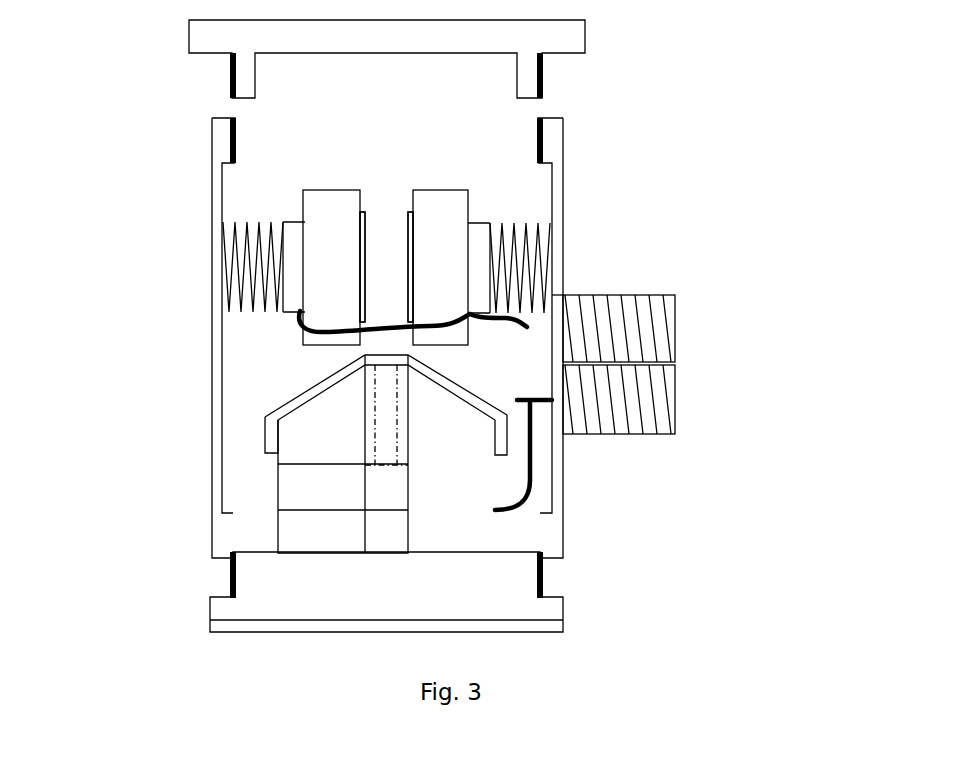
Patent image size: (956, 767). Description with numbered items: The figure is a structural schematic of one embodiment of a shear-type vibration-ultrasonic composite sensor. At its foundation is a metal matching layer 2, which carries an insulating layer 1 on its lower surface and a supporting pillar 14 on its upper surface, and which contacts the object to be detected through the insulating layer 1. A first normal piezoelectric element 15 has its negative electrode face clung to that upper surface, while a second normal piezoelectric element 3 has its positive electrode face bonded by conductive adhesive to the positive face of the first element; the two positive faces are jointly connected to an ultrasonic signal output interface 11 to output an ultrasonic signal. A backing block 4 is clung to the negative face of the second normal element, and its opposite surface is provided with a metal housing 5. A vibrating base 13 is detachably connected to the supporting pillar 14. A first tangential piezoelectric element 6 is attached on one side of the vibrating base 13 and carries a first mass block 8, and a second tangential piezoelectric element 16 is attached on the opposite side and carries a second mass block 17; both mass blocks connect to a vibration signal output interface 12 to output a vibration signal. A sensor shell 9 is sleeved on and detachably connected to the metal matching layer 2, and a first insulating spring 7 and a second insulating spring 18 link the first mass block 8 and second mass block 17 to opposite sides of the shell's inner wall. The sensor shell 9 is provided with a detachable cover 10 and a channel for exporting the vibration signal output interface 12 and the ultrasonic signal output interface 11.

The insulating layer 1 is at (192, 625).
The metal matching layer 2 is at (214, 573).
The second normal piezoelectric element 3 is at (260, 495).
The backing block 4 is at (287, 423).
The metal housing 5 is at (307, 378).
The first tangential piezoelectric element 6 is at (335, 295).
The first insulating spring 7 is at (204, 248).
The first mass block 8 is at (312, 203).
The sensor shell 9 is at (192, 137).
The cover 10 is at (169, 43).
The ultrasonic signal output interface 11 is at (696, 402).
The vibration signal output interface 12 is at (696, 329).
The vibrating base 13 is at (408, 252).
The supporting pillar 14 is at (406, 450).
The first normal piezoelectric element 15 is at (515, 528).
The second tangential piezoelectric element 16 is at (433, 207).
The second mass block 17 is at (477, 221).
The second insulating spring 18 is at (555, 228).